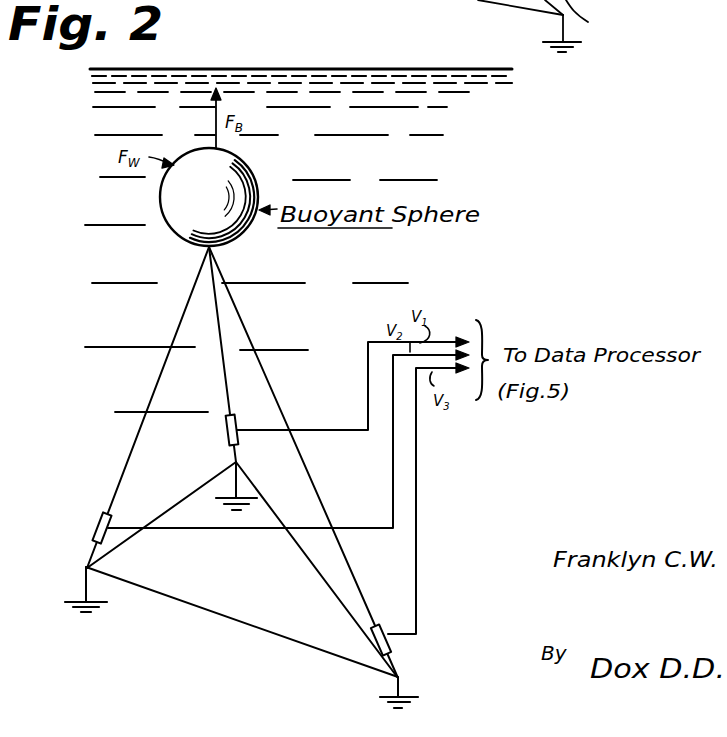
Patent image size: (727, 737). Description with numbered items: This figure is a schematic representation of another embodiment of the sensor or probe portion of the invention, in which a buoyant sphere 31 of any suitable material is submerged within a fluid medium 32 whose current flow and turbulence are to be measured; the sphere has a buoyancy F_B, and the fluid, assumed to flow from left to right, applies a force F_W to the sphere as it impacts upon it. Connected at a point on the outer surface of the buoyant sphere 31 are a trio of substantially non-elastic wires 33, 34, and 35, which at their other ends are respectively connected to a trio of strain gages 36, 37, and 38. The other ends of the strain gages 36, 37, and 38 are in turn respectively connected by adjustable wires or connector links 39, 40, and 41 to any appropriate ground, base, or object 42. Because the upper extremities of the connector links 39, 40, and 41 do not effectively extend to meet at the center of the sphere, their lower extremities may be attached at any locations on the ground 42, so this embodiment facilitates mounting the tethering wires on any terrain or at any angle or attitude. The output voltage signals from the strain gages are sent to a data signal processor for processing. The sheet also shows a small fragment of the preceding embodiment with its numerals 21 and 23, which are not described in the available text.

The ground connection (FIG. 1 fragment) 21 is at (594, 19).
The support line (FIG. 1 fragment) 23 is at (549, 26).
The buoyant sphere 31 is at (240, 232).
The fluid medium 32 is at (349, 61).
The non-elastic wire 33 is at (170, 336).
The non-elastic wire 34 is at (219, 337).
The non-elastic wire 35 is at (245, 331).
The strain gage 36 is at (94, 522).
The strain gage 37 is at (227, 436).
The strain gage 38 is at (380, 625).
The adjustable wire or connector link 39 is at (90, 552).
The adjustable wire or connector link 40 is at (234, 462).
The adjustable wire or connector link 41 is at (400, 665).
The ground, base, or object 42 is at (200, 583).